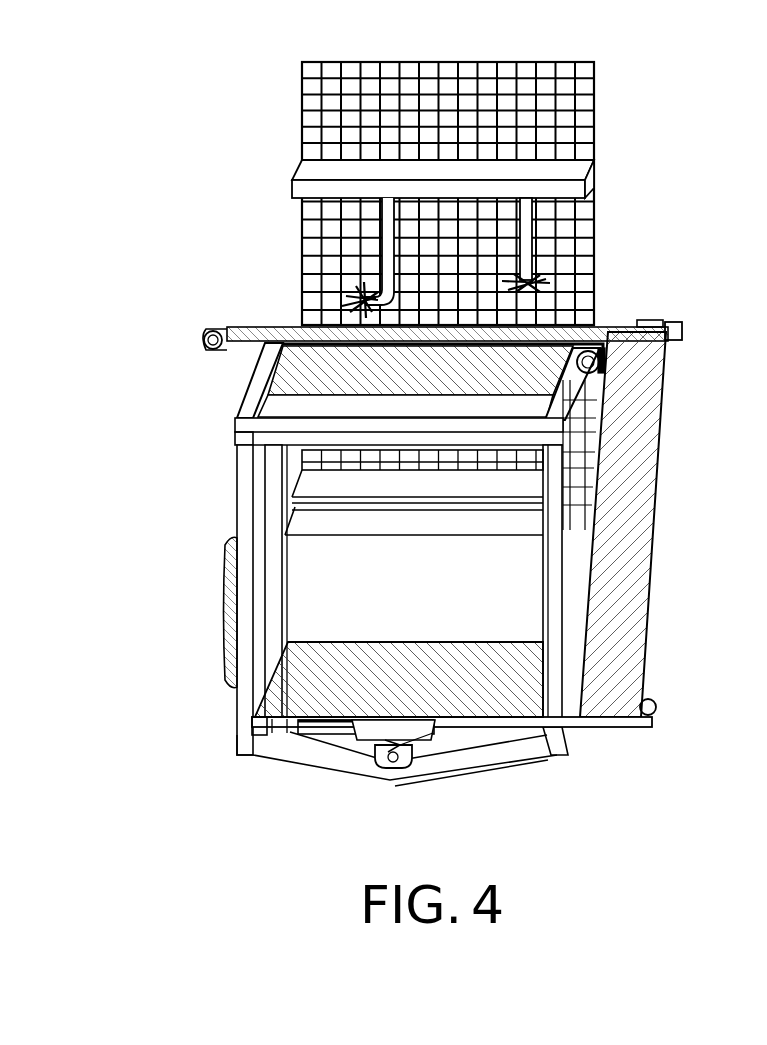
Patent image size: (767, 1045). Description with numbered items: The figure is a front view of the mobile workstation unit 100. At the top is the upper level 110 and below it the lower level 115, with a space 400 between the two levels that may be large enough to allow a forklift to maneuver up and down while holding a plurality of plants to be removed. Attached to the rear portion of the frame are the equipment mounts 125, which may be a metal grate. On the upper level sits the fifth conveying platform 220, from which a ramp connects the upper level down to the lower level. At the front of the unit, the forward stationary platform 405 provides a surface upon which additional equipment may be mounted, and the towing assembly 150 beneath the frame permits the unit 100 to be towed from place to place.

The unit 100 is at (90, 82).
The equipment mounts 125 is at (345, 100).
The upper level 110 is at (250, 405).
The fifth conveying platform 220 is at (630, 467).
The space 400 is at (192, 455).
The lower level 115 is at (295, 702).
The forward stationary platform 405 is at (350, 727).
The towing assembly 150 is at (375, 755).